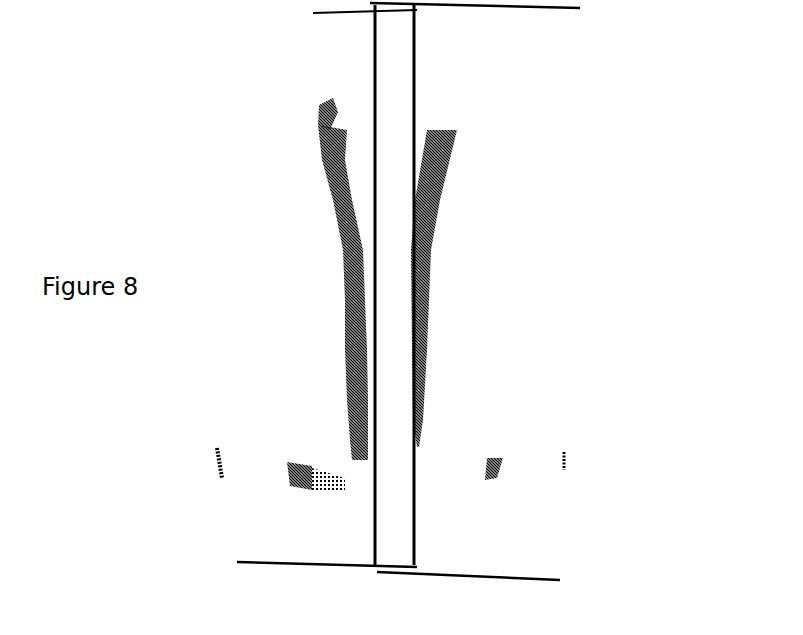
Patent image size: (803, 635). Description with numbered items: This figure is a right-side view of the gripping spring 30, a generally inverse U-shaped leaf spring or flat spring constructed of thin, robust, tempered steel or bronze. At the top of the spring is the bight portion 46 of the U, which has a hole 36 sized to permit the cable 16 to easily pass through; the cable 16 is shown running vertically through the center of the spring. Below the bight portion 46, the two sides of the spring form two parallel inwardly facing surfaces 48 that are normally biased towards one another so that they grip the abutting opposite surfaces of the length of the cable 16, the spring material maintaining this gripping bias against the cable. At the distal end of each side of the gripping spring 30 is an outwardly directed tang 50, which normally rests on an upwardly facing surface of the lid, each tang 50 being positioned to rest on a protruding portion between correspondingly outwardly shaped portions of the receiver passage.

The cable 16 is at (388, 65).
The hole 36 is at (418, 97).
The bight portion 46 is at (347, 118).
The gripping spring 30 is at (487, 203).
The inwardly facing surfaces 48 is at (425, 339).
The tang 50 is at (257, 450).